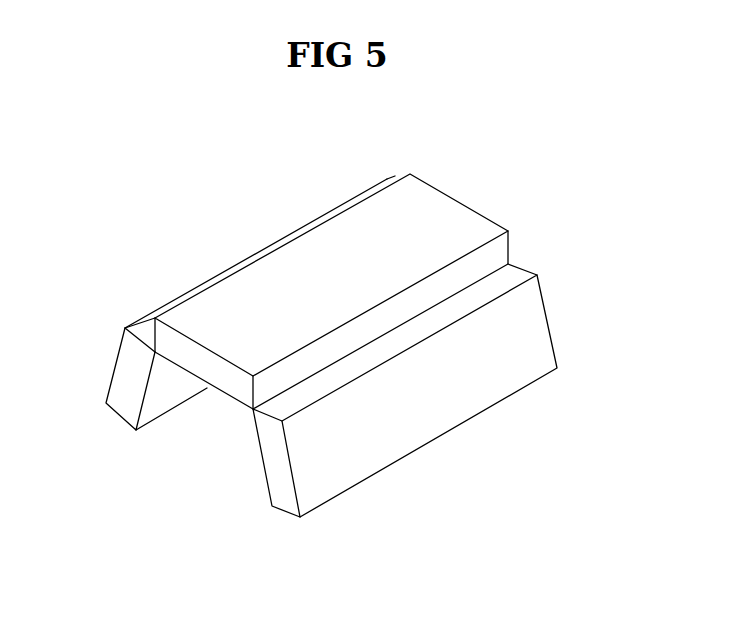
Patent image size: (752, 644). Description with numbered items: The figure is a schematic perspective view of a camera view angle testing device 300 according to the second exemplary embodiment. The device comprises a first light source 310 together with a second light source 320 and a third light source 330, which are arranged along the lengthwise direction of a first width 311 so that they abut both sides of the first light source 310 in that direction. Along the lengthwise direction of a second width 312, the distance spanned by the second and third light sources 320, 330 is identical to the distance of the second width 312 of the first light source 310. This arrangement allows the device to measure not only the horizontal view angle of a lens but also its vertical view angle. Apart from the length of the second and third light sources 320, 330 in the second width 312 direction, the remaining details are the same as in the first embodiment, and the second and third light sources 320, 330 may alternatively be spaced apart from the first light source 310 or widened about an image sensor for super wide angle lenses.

The camera view angle testing device 300 is at (470, 124).
The first light source 310 is at (452, 217).
The first width 311 is at (177, 330).
The second width 312 is at (295, 231).
The second light source 320 is at (388, 178).
The third light source 330 is at (537, 300).